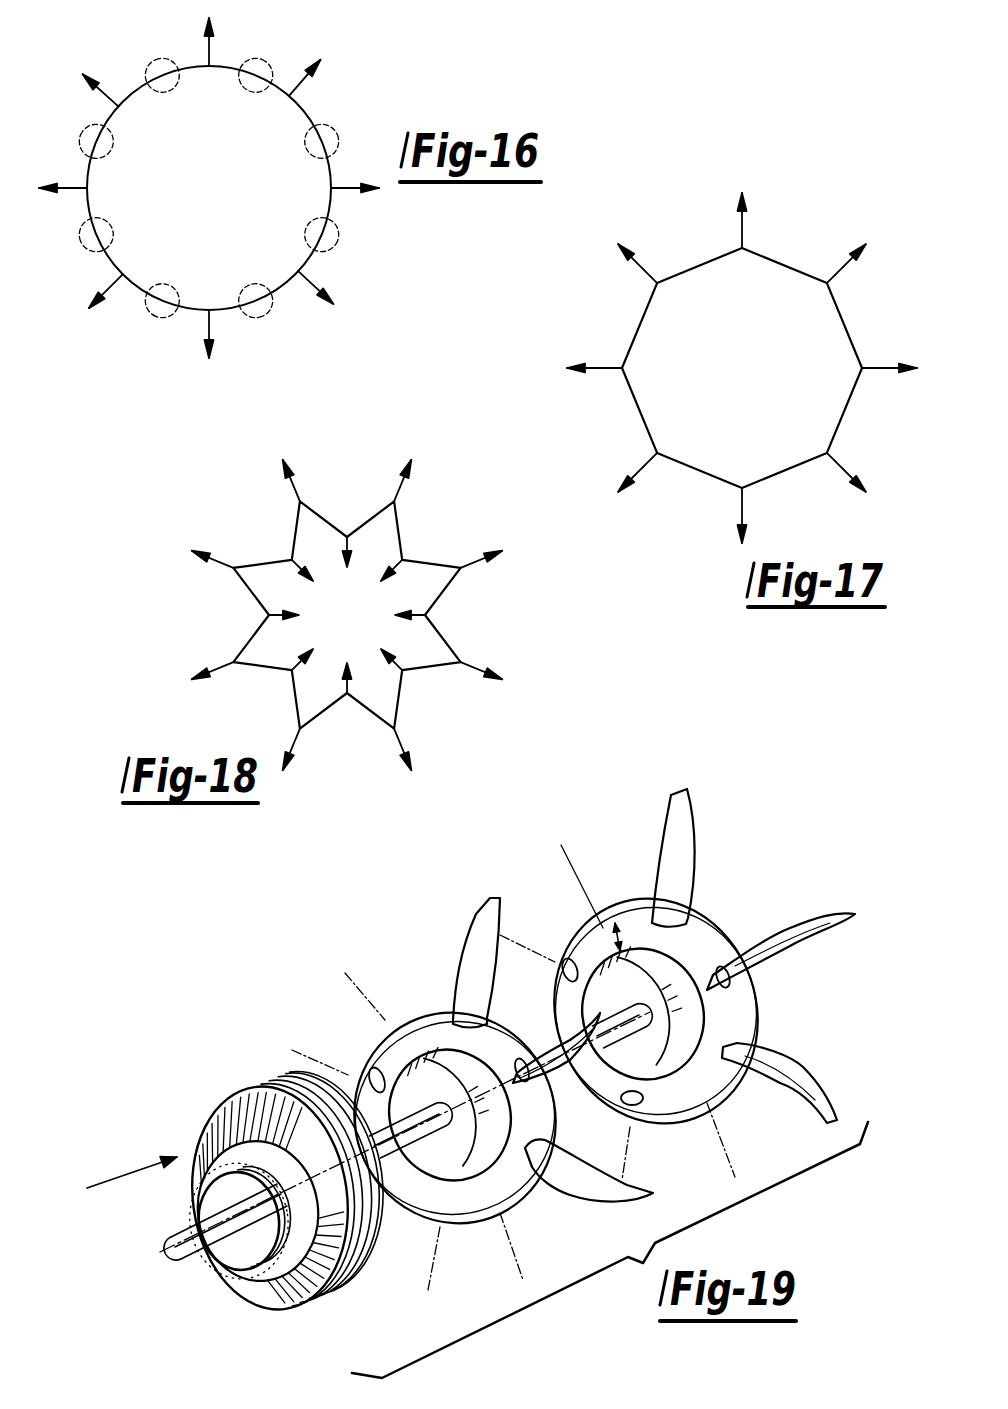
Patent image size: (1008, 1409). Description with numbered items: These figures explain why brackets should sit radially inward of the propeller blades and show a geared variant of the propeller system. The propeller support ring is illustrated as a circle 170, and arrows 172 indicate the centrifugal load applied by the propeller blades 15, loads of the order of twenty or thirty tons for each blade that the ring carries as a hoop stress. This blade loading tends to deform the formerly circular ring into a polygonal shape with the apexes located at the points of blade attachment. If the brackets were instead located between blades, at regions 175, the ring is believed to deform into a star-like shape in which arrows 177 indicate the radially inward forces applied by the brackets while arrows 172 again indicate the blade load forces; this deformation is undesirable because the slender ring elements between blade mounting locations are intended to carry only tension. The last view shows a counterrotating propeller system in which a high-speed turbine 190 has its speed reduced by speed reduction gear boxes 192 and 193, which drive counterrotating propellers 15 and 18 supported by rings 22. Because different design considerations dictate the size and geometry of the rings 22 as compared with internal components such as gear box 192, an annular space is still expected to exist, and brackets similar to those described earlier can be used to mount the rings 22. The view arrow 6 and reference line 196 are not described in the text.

In FIG. 16, the circle 170 is at (227, 63).
In FIG. 17, the circle 170 is at (843, 413).
In FIG. 16, the arrows 172 is at (343, 187).
In FIG. 17, the arrows 172 is at (742, 221).
In FIG. 18, the arrows 172 is at (480, 568).
In FIG. 16, the regions 175 is at (163, 92).
In FIG. 18, the arrows 177 is at (350, 565).
In FIG. 19, the view direction arrow 6 is at (120, 1177).
In FIG. 19, the high-speed turbine 190 is at (210, 1125).
In FIG. 19, the speed reduction gear box 192 is at (413, 1100).
In FIG. 19, the propeller blades 15 is at (481, 996).
In FIG. 19, the counterrotating propeller 18 is at (690, 890).
In FIG. 19, the rings 22 is at (422, 1007).
In FIG. 19, the speed reduction gear box 193 is at (597, 988).
In FIG. 19, the reference line 196 is at (596, 920).